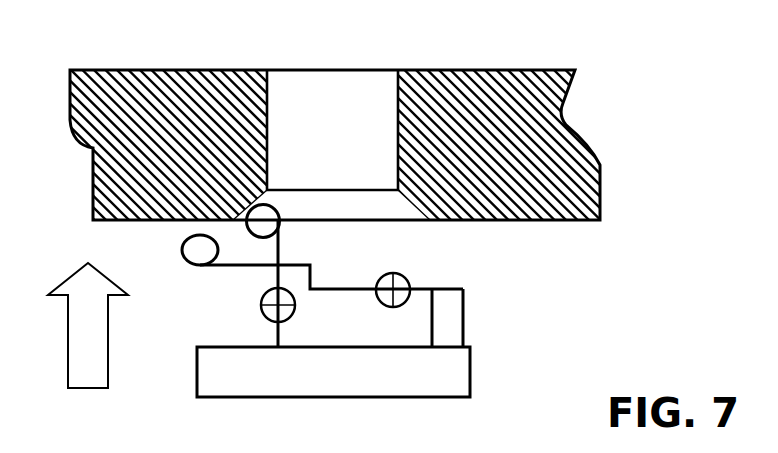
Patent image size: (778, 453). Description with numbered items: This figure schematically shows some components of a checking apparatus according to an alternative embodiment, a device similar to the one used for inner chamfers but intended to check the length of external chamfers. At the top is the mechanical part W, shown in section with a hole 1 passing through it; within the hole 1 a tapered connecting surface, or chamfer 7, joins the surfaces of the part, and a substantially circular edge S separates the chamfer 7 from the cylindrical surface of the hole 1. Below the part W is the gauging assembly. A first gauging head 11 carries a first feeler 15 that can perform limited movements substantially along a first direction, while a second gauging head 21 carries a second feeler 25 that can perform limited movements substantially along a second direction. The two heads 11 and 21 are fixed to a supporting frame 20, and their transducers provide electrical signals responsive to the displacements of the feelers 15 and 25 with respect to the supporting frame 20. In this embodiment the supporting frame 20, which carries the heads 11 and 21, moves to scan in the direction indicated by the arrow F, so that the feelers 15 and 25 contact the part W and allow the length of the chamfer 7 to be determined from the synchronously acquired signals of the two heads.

The mechanical part W is at (180, 85).
The circular edge S is at (285, 188).
The hole 1 is at (318, 137).
The chamfer 7 is at (400, 206).
The second feeler 25 is at (262, 222).
The first feeler 15 is at (200, 255).
The first gauging head 11 is at (345, 274).
The second gauging head 21 is at (232, 310).
The supporting frame 20 is at (450, 373).
The arrow F is at (88, 325).